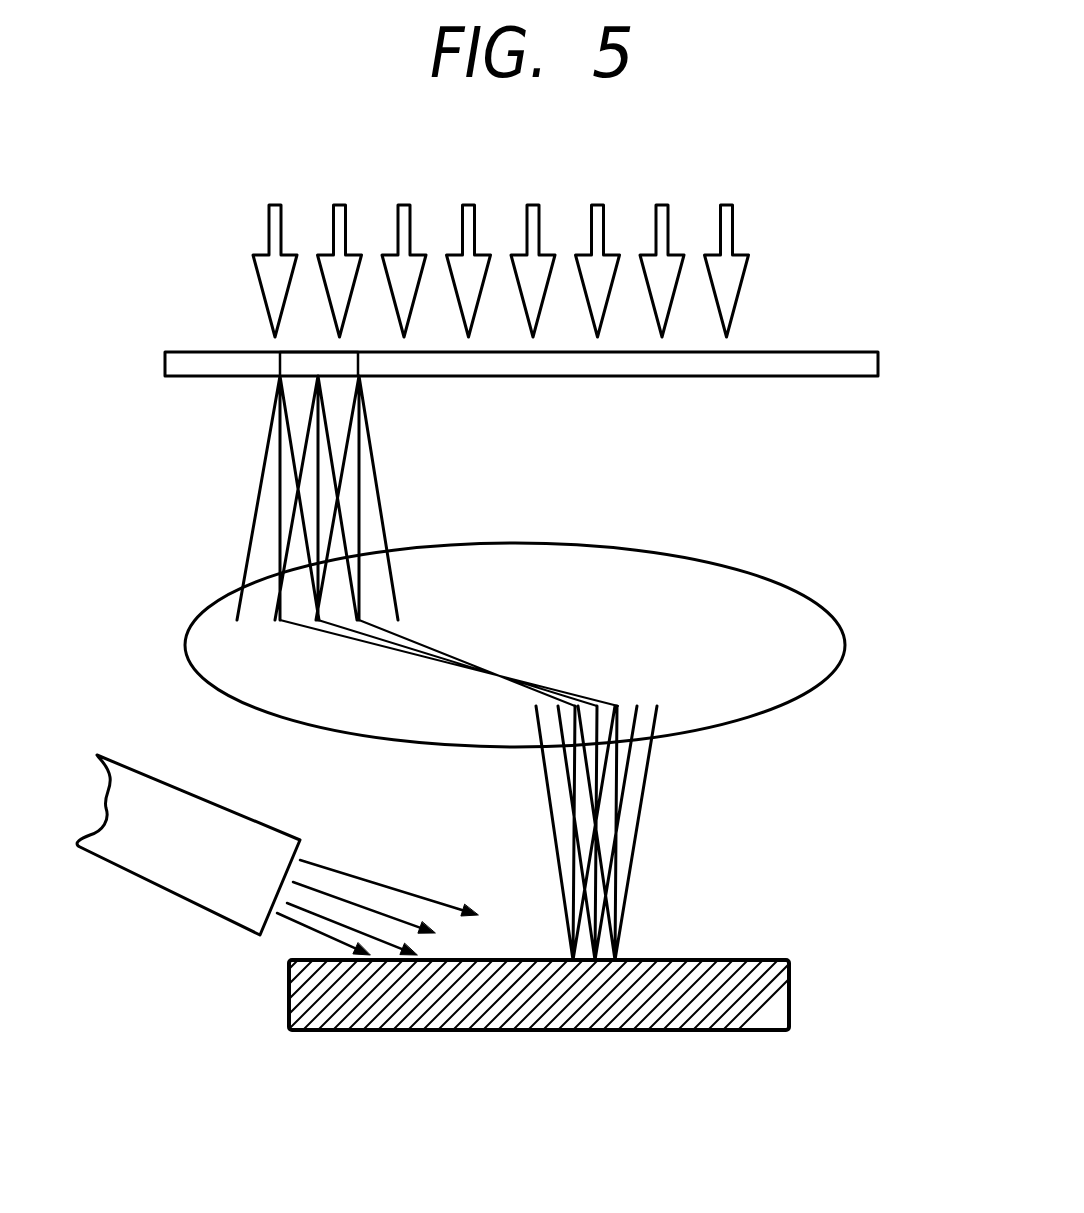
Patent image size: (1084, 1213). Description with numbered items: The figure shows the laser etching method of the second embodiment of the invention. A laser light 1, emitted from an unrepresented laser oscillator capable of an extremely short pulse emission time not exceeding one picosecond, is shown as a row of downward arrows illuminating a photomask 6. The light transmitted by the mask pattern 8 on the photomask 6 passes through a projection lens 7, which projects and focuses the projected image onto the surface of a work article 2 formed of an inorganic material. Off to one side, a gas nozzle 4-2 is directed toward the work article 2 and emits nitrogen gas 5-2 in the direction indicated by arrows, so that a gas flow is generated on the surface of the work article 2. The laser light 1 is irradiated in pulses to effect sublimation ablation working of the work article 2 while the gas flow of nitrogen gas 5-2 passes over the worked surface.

The laser light 1 is at (731, 227).
The mask pattern 8 is at (303, 352).
The photomask 6 is at (817, 378).
The projection lens 7 is at (822, 632).
The work article 2 is at (790, 1001).
The gas nozzle 4-2 is at (147, 793).
The nitrogen gas 5-2 is at (279, 913).